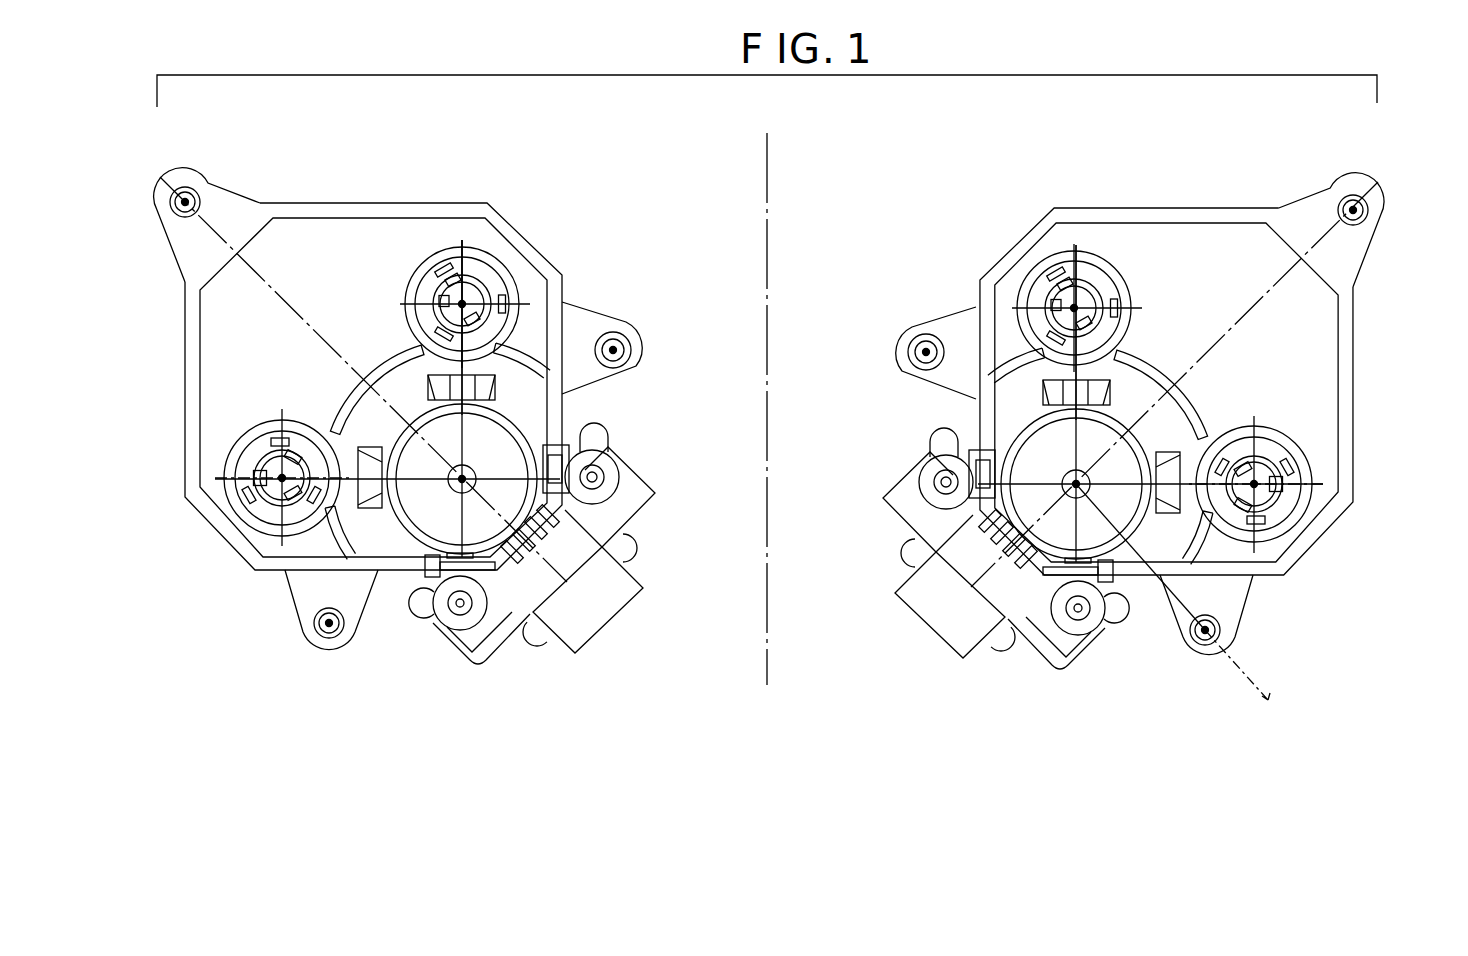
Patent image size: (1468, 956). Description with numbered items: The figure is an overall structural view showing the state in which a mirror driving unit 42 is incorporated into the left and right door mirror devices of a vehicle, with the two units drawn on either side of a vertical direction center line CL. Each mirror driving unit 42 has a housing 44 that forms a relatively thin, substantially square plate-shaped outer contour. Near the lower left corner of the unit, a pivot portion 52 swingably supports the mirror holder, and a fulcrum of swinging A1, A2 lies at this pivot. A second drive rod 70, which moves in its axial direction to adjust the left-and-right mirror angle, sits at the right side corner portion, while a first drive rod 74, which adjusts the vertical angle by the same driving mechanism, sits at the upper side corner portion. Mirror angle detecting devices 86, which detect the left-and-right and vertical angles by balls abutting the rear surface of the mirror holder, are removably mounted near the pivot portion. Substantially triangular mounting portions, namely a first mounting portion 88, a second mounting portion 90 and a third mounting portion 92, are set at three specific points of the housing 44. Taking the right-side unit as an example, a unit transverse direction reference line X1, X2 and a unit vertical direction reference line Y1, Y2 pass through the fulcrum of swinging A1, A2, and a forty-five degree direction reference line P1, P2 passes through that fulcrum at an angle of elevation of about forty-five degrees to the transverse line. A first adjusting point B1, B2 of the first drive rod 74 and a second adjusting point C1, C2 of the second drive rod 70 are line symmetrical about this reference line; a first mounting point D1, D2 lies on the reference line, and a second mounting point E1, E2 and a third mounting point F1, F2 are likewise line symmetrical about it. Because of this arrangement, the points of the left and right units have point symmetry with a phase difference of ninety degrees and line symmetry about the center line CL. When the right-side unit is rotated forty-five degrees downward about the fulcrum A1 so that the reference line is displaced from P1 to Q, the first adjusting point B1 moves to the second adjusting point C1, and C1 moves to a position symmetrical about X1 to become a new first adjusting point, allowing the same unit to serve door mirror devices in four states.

The mirror driving unit 42 is at (436, 184).
The housing 44 is at (386, 197).
The pivot portion 52 is at (480, 490).
The second drive rod 70 is at (433, 287).
The first drive rod 74 is at (295, 450).
The mirror angle detecting device 86 is at (624, 632).
The first mounting portion 88 is at (183, 243).
The second mounting portion 90 is at (297, 588).
The third mounting portion 92 is at (638, 350).
The 45° direction reference line P1 is at (1374, 178).
The 45° direction reference line P2 is at (175, 172).
The first mounting point D1 is at (1365, 225).
The first mounting point D2 is at (210, 183).
The unit vertical direction reference line Y1 is at (1085, 250).
The unit vertical direction reference line Y2 is at (466, 300).
The unit transverse direction reference line X1 is at (1330, 484).
The unit transverse direction reference line X2 is at (215, 457).
The second adjusting point C1 is at (1260, 490).
The second adjusting point C2 is at (472, 293).
The first adjusting point B1 is at (1066, 302).
The first adjusting point B2 is at (280, 485).
The second mounting point E1 is at (928, 337).
The second mounting point E2 is at (330, 641).
The third mounting point F1 is at (1233, 623).
The third mounting point F2 is at (628, 340).
The fulcrum of swinging A1 is at (1070, 498).
The fulcrum of swinging A2 is at (460, 495).
The rotated 45° direction reference line Q is at (1268, 700).
The vertical direction center line CL is at (767, 182).